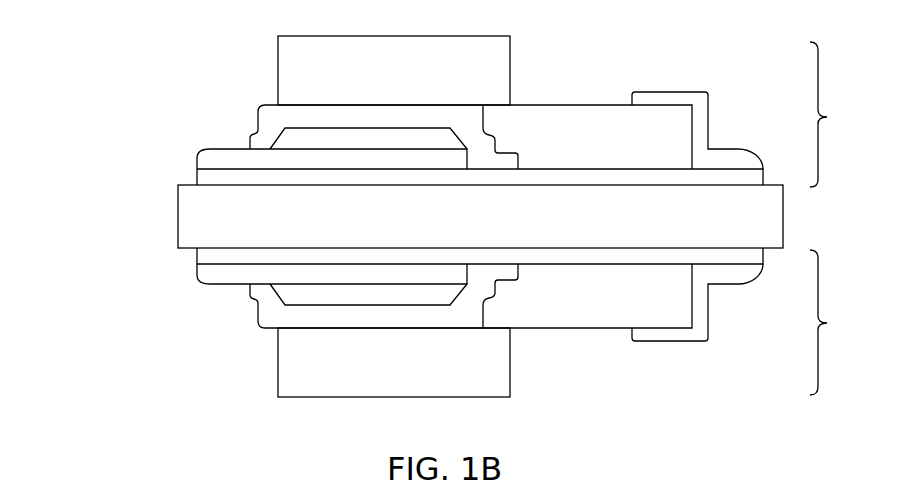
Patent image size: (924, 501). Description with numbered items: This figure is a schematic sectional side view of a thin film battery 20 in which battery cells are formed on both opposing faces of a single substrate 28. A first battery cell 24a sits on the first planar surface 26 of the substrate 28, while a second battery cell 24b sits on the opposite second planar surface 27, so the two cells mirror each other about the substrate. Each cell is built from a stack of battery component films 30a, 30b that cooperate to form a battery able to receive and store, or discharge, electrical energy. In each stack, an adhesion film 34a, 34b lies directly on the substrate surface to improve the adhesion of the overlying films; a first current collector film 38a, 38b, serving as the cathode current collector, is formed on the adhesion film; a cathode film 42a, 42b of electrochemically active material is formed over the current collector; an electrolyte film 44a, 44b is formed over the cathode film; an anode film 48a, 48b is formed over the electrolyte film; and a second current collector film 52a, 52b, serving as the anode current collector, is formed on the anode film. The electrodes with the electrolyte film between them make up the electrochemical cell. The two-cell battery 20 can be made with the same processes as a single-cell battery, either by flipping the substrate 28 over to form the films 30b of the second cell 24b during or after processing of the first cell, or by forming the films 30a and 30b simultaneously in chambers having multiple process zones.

The thin film battery 20 is at (97, 200).
The first battery cell 24a is at (633, 63).
The second battery cell 24b is at (622, 358).
The first planar surface 26 is at (248, 185).
The second planar surface 27 is at (250, 249).
The substrate 28 is at (458, 231).
The battery component films of the first cell 30a is at (844, 114).
The battery component films of the second cell 30b is at (845, 322).
The adhesion film 34a is at (197, 177).
The adhesion film 34b is at (197, 262).
The first current collector film 38a is at (200, 155).
The first current collector film 38b is at (200, 276).
The cathode film 42a is at (302, 142).
The cathode film 42b is at (290, 297).
The electrolyte film 44a is at (445, 117).
The electrolyte film 44b is at (468, 312).
The anode film 48a is at (407, 75).
The anode film 48b is at (415, 375).
The second current collector film 52a is at (710, 100).
The second current collector film 52b is at (712, 310).